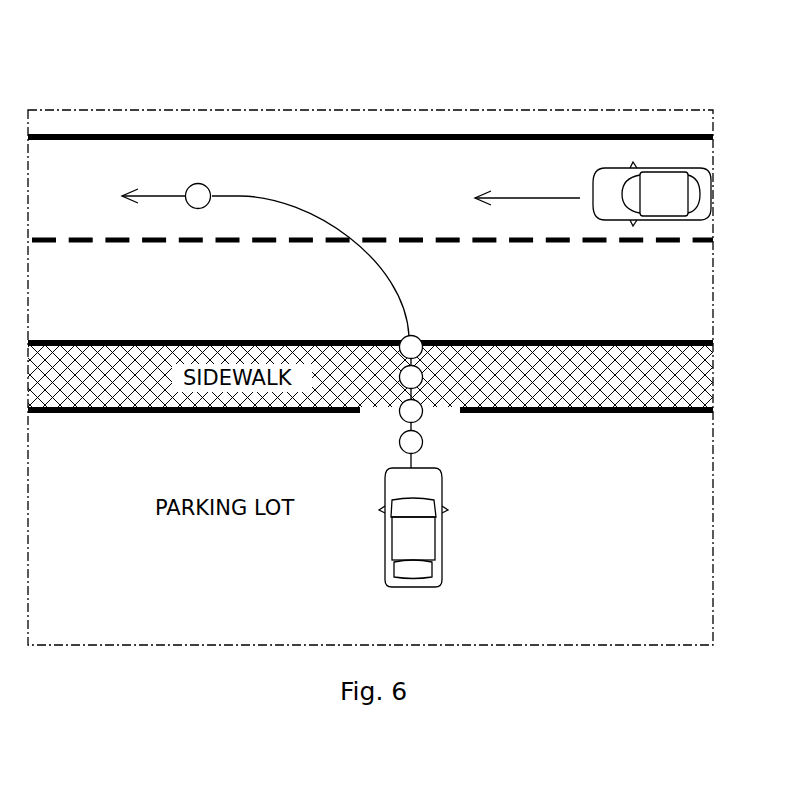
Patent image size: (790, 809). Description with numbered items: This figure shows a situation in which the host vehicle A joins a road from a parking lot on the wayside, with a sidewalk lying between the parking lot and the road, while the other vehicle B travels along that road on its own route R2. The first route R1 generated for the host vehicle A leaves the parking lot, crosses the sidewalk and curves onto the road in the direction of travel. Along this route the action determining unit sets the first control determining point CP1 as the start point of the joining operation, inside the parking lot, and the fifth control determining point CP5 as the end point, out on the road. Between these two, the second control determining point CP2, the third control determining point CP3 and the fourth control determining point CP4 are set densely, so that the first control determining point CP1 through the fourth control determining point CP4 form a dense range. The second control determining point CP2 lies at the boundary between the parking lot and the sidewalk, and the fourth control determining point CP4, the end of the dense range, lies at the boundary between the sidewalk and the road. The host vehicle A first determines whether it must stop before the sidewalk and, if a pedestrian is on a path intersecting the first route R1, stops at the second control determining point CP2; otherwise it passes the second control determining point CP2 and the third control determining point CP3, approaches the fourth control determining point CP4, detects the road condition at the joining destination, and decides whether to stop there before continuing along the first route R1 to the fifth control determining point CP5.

The first control determining point CP1 is at (420, 450).
The second control determining point CP2 is at (420, 419).
The third control determining point CP3 is at (422, 381).
The fourth control determining point CP4 is at (421, 339).
The fifth control determining point CP5 is at (197, 184).
The first route R1 is at (240, 196).
The second route R2 is at (531, 198).
The host vehicle A is at (388, 573).
The other vehicle B is at (664, 185).